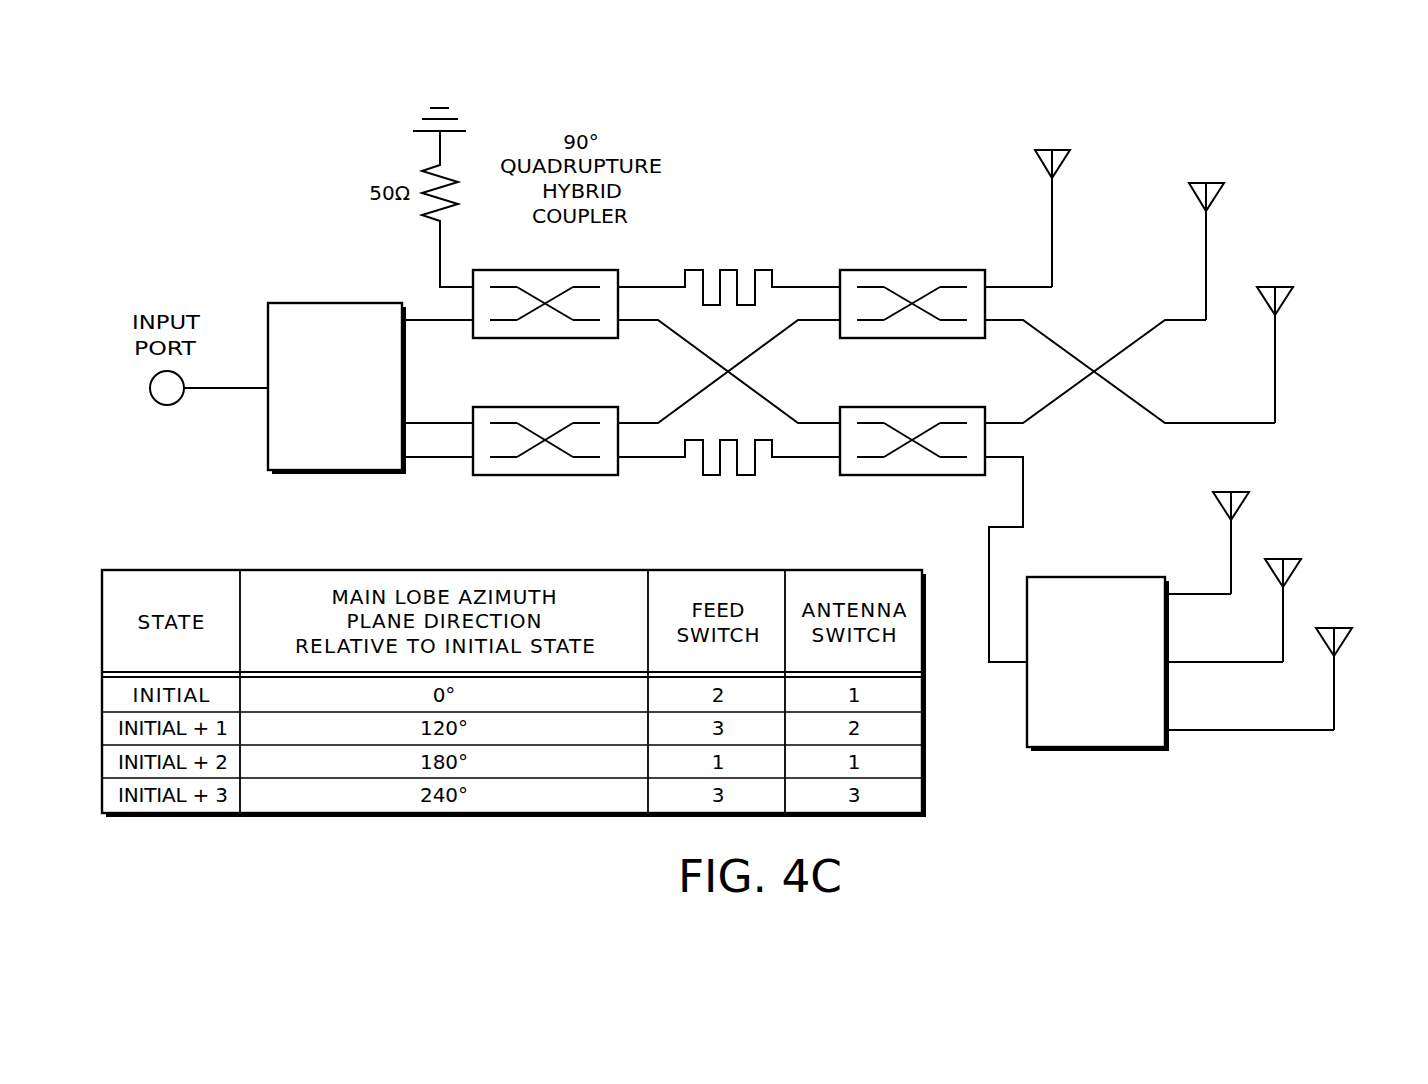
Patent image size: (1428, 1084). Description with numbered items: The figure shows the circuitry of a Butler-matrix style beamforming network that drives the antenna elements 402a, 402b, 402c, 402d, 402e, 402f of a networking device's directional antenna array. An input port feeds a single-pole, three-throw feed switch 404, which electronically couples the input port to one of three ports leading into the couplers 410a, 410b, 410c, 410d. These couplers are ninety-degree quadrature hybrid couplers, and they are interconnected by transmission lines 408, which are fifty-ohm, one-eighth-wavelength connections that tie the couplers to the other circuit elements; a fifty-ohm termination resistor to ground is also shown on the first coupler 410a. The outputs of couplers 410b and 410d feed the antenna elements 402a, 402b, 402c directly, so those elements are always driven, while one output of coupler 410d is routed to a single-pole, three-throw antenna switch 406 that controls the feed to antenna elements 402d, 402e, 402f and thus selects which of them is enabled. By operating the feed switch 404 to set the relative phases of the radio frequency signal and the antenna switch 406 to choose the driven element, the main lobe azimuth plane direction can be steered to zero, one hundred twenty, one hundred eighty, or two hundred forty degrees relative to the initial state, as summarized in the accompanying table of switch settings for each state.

The feed switch 404 is at (318, 443).
The antenna switch 406 is at (1114, 717).
The transmission lines 408 is at (660, 253).
The coupler 410a is at (543, 268).
The coupler 410b is at (910, 268).
The coupler 410c is at (543, 405).
The coupler 410d is at (910, 405).
The antenna element 402a is at (1056, 147).
The antenna element 402b is at (1210, 180).
The antenna element 402c is at (1279, 284).
The antenna element 402d is at (1235, 489).
The antenna element 402e is at (1287, 556).
The antenna element 402f is at (1338, 625).